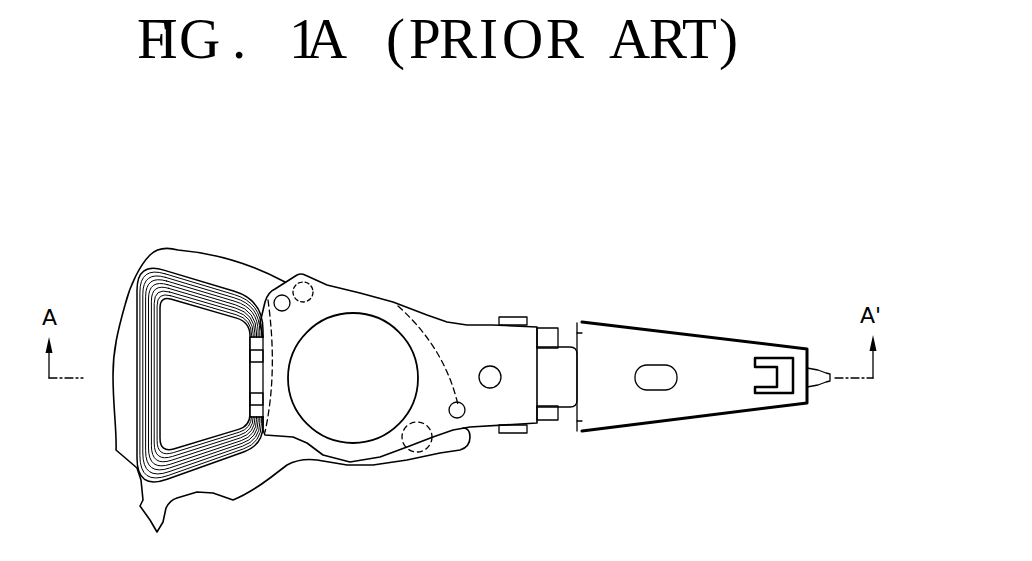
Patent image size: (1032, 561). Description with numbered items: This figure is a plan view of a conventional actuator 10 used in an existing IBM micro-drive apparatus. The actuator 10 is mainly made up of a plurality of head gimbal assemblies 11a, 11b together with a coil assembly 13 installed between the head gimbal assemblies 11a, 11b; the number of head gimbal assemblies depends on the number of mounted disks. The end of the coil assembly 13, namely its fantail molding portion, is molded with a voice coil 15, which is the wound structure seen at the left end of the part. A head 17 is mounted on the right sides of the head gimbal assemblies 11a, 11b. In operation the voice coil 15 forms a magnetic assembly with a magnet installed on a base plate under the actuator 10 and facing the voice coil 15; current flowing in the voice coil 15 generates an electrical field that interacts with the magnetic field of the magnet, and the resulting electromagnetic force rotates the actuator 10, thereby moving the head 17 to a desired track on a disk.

The actuator 10 is at (471, 351).
The head gimbal assembly 11a is at (413, 335).
The head gimbal assembly 11b is at (347, 302).
The coil assembly 13 is at (165, 259).
The voice coil 15 is at (222, 295).
The head 17 is at (782, 350).